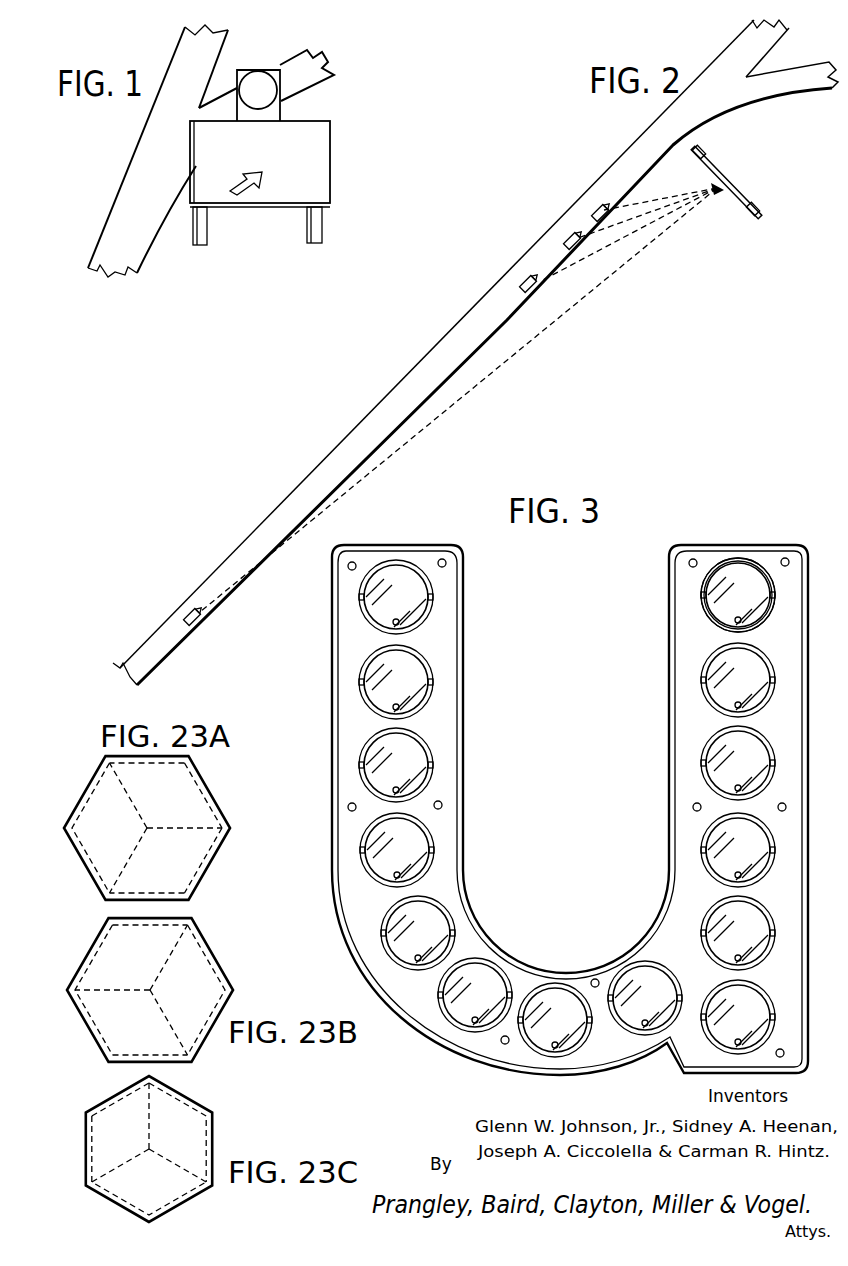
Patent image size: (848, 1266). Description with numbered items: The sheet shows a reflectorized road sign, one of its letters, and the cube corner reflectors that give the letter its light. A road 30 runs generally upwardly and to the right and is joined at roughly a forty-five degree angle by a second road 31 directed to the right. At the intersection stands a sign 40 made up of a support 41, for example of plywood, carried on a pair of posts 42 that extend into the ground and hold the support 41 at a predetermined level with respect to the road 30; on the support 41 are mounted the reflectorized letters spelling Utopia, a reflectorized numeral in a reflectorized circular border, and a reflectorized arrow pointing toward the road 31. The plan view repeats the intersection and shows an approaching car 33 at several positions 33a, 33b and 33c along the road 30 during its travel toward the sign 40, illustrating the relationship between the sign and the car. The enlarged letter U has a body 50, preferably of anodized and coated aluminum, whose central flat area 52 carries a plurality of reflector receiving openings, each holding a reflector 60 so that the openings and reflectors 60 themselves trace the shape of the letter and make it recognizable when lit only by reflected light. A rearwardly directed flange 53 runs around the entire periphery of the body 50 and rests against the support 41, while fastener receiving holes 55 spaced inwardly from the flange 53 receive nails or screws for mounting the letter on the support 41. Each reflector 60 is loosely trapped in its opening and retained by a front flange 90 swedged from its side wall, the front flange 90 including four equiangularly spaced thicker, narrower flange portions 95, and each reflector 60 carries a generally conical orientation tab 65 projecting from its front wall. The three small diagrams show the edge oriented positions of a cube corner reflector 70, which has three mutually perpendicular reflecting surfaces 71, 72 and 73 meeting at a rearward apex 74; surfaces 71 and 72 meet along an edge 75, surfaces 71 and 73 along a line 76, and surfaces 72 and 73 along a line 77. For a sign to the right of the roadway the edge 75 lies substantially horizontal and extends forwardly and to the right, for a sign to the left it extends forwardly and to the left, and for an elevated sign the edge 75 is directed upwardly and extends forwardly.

In FIG. 1, the road 30 is at (190, 62).
In FIG. 2, the road 30 is at (742, 53).
In FIG. 1, the second road 31 is at (292, 67).
In FIG. 2, the second road 31 is at (772, 80).
In FIG. 2, the car 33 is at (184, 614).
In FIG. 2, the car position 33a is at (516, 283).
In FIG. 2, the car position 33b is at (560, 240).
In FIG. 2, the car position 33c is at (588, 211).
In FIG. 1, the sign 40 is at (288, 176).
In FIG. 2, the sign 40 is at (500, 371).
In FIG. 1, the support 41 is at (292, 128).
In FIG. 2, the support 41 is at (757, 222).
In FIG. 1, the posts 42 is at (204, 233).
In FIG. 2, the posts 42 is at (708, 154).
In FIG. 3, the body 50 is at (567, 808).
In FIG. 3, the flat area 52 is at (342, 650).
In FIG. 3, the flange 53 is at (418, 546).
In FIG. 3, the fastener receiving holes 55 is at (356, 562).
In FIG. 3, the reflector 60 is at (418, 595).
In FIG. 3, the orientation tab 65 is at (399, 624).
In FIG. 3, the front flange 90 is at (772, 586).
In FIG. 3, the flange portions 95 is at (692, 627).
In FIG. 23A, the cube corner reflector 70 is at (86, 789).
In FIG. 23B, the cube corner reflector 70 is at (80, 1030).
In FIG. 23C, the cube corner reflector 70 is at (196, 1104).
In FIG. 23A, the reflecting surface 71 is at (183, 786).
In FIG. 23B, the reflecting surface 71 is at (165, 1068).
In FIG. 23C, the reflecting surface 71 is at (108, 1125).
In FIG. 23A, the reflecting surface 72 is at (200, 883).
In FIG. 23B, the reflecting surface 72 is at (142, 947).
In FIG. 23C, the reflecting surface 72 is at (205, 1129).
In FIG. 23A, the reflecting surface 73 is at (88, 833).
In FIG. 23B, the reflecting surface 73 is at (226, 986).
In FIG. 23C, the reflecting surface 73 is at (130, 1192).
In FIG. 23A, the apex 74 is at (142, 829).
In FIG. 23B, the apex 74 is at (144, 996).
In FIG. 23C, the apex 74 is at (148, 1160).
In FIG. 23A, the edge 75 is at (184, 827).
In FIG. 23B, the edge 75 is at (130, 988).
In FIG. 23C, the edge 75 is at (151, 1123).
In FIG. 23A, the line 76 is at (127, 786).
In FIG. 23B, the line 76 is at (172, 1030).
In FIG. 23C, the line 76 is at (115, 1166).
In FIG. 23A, the line 77 is at (135, 868).
In FIG. 23B, the line 77 is at (165, 958).
In FIG. 23C, the line 77 is at (183, 1163).